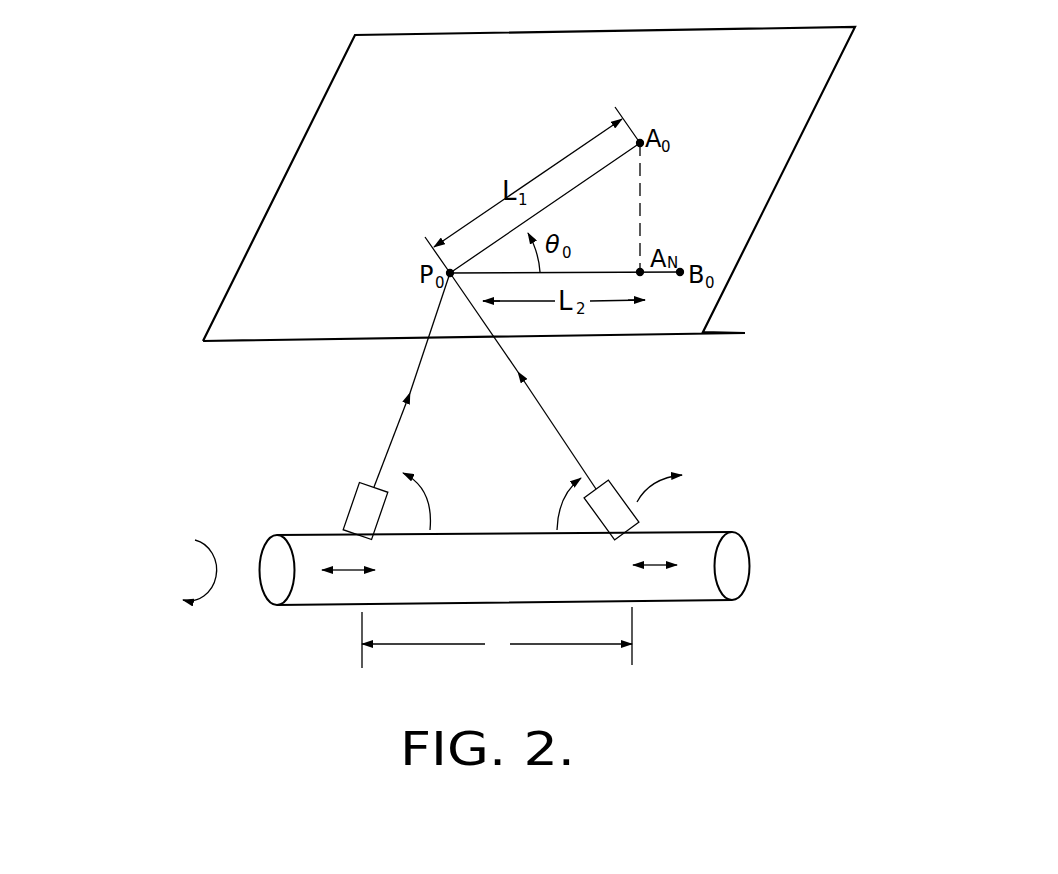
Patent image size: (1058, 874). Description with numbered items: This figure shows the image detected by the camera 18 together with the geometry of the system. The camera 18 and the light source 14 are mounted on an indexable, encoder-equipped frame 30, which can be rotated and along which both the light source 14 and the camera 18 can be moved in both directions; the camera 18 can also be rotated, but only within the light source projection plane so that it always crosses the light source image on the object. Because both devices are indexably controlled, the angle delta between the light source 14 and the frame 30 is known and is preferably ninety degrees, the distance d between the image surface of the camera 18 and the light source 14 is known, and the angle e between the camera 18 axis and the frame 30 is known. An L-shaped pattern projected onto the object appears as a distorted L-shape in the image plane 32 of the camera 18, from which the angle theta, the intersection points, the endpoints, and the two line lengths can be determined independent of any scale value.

The light source 14 is at (347, 513).
The camera 18 is at (620, 495).
The frame 30 is at (672, 597).
The image plane 32 is at (757, 223).